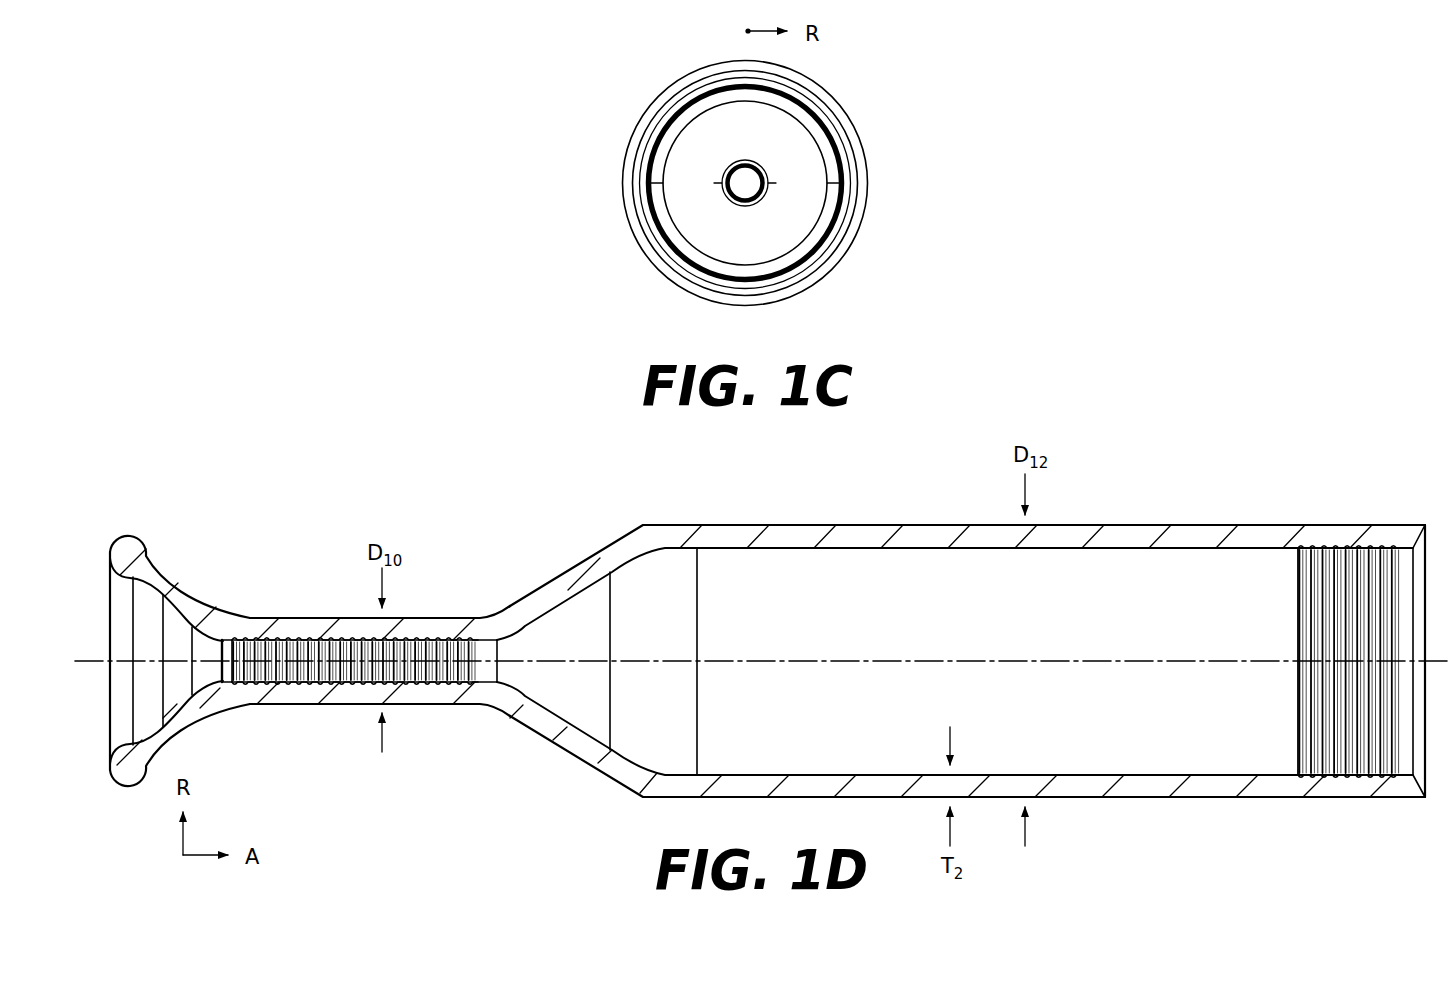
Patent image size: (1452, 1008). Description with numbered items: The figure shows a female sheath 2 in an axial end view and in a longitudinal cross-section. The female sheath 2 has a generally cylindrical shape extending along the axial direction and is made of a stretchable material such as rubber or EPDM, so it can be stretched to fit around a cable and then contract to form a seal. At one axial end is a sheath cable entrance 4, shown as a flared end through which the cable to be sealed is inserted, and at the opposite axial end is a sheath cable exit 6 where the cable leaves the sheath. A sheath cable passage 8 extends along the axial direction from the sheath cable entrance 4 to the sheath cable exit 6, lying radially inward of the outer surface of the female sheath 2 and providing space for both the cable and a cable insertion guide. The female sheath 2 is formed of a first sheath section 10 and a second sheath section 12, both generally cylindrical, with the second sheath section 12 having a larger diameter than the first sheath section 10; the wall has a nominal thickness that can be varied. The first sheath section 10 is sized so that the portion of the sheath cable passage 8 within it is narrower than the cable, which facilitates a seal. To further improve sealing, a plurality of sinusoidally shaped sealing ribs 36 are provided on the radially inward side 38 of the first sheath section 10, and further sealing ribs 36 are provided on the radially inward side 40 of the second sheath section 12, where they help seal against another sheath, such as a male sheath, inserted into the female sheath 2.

In FIG. 1C, the female sheath 2 is at (578, 105).
In FIG. 1D, the female sheath 2 is at (1166, 840).
In FIG. 1D, the sheath cable entrance 4 is at (108, 598).
In FIG. 1C, the sheath cable exit 6 is at (829, 88).
In FIG. 1D, the sheath cable exit 6 is at (1418, 804).
In FIG. 1C, the sheath cable passage 8 is at (744, 188).
In FIG. 1D, the sheath cable passage 8 is at (803, 701).
In FIG. 1D, the first sheath section 10 is at (298, 617).
In FIG. 1D, the second sheath section 12 is at (1146, 524).
In FIG. 1C, the sealing ribs 36 is at (848, 163).
In FIG. 1D, the sealing ribs 36 is at (340, 670).
In FIG. 1C, the radially inward side of first sheath section 38 is at (737, 163).
In FIG. 1D, the radially inward side of first sheath section 38 is at (422, 681).
In FIG. 1C, the radially inward side of second sheath section 40 is at (745, 183).
In FIG. 1D, the radially inward side of second sheath section 40 is at (868, 549).